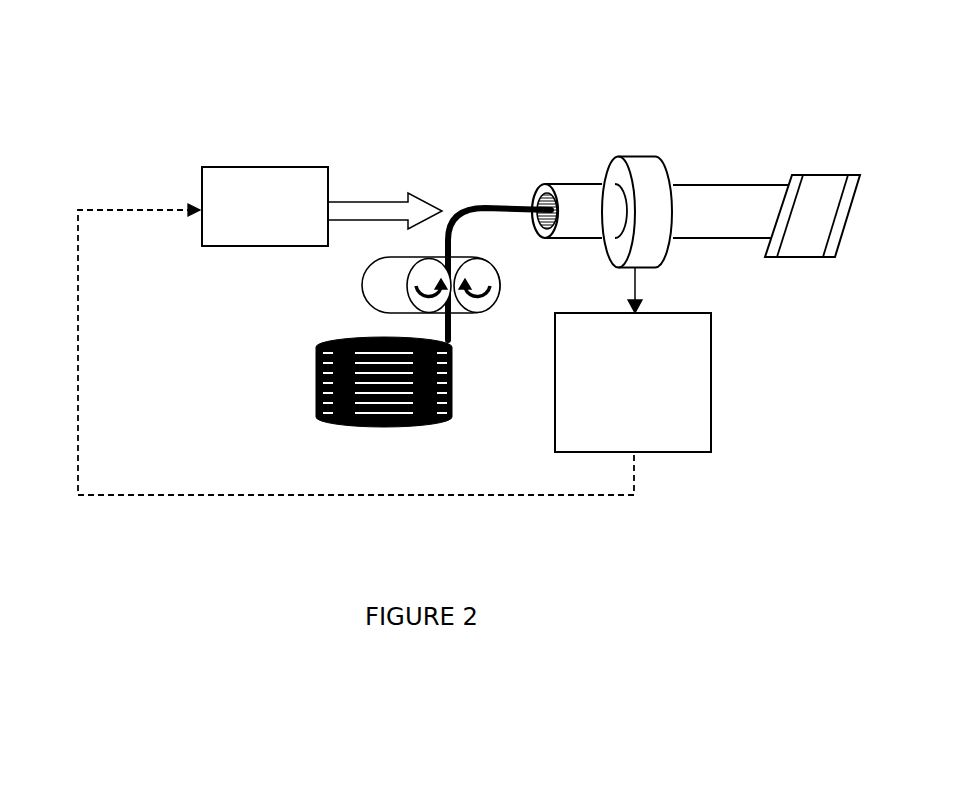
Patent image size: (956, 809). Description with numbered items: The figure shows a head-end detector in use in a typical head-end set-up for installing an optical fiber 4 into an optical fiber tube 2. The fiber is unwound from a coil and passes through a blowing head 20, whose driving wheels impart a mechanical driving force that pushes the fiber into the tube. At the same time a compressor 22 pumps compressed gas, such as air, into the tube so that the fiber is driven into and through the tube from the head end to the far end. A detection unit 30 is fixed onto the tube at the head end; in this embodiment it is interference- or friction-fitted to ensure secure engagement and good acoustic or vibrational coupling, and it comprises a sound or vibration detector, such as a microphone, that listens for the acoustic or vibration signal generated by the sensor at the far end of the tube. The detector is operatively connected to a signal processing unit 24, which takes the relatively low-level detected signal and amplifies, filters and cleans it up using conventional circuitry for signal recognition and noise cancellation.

The optical fiber tube 2 is at (710, 180).
The optical fiber 4 is at (318, 414).
The blowing head 20 is at (360, 270).
The compressor 22 is at (356, 331).
The signal processing unit 24 is at (633, 359).
The detection unit 30 is at (640, 122).